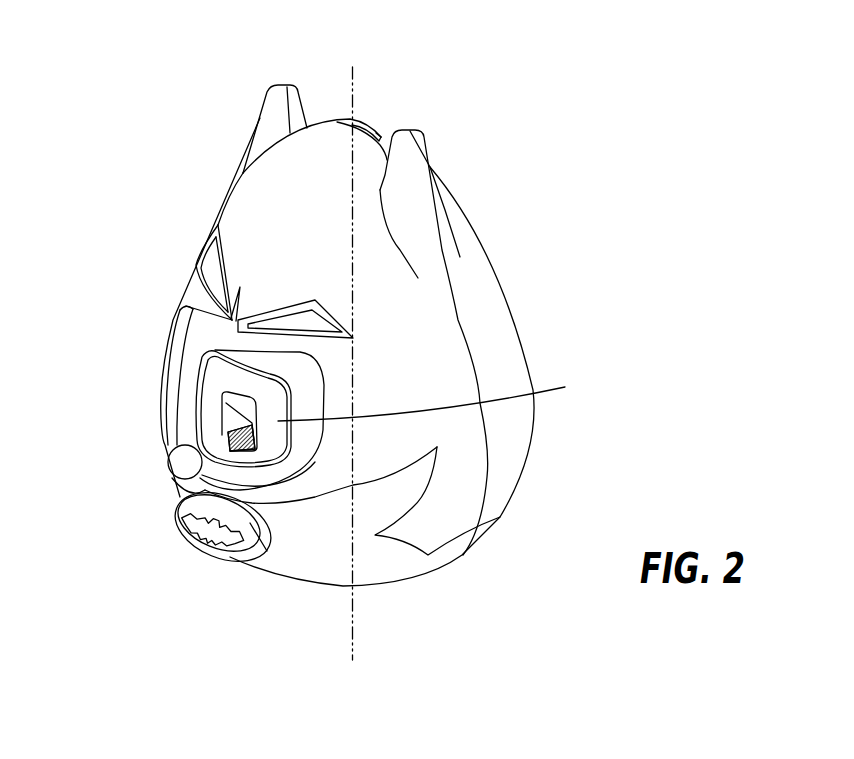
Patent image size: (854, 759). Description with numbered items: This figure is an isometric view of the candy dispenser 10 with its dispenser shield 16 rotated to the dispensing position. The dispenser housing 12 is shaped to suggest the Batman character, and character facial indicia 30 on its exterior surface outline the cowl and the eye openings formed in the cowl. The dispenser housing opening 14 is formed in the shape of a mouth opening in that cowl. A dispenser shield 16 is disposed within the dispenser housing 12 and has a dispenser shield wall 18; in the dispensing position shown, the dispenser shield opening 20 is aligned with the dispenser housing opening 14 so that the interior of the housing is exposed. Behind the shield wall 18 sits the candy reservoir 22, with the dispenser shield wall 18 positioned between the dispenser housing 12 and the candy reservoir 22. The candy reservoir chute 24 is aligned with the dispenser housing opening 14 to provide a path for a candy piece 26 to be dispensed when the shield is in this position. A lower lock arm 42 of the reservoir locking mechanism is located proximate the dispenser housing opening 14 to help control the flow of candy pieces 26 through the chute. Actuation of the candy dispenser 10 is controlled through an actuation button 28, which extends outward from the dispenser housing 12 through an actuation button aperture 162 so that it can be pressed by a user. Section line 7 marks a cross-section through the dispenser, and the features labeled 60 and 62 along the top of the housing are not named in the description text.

The section line 7- 7 is at (353, 80).
The candy dispenser 10 is at (140, 152).
The dispenser housing 12 is at (497, 292).
The dispenser housing opening 14 is at (177, 321).
The dispenser shield 16 is at (185, 363).
The dispenser shield wall 18 is at (185, 363).
The dispenser shield opening 20 is at (203, 401).
The candy reservoir 22 is at (435, 399).
The candy reservoir chute 24 is at (227, 405).
The candy piece 26 is at (183, 462).
The actuation button 28 is at (214, 541).
The character facial indicia 30 is at (203, 270).
The lower lock arm 42 is at (233, 443).
The seam band 60 is at (353, 122).
The fastener tab 62 is at (382, 131).
The actuation button aperture 162 is at (227, 550).